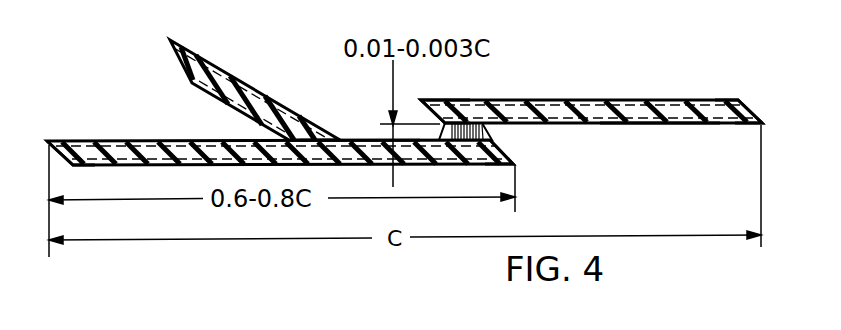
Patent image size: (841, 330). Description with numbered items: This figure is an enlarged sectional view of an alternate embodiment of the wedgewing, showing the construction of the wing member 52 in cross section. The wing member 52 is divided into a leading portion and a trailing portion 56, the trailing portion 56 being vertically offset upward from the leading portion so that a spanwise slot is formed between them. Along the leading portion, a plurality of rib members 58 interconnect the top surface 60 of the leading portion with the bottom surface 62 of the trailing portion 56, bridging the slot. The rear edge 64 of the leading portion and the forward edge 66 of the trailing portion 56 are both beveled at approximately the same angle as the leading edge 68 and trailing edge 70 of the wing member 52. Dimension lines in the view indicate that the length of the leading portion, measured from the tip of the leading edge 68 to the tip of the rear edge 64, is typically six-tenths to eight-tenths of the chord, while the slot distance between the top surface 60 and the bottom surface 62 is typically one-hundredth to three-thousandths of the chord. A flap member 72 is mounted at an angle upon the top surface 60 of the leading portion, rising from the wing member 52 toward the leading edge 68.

The wing member 52 is at (128, 140).
The trailing portion 56 is at (610, 99).
The rib members 58 is at (495, 128).
The top surface 60 is at (362, 140).
The bottom surface 62 is at (655, 125).
The rear edge 64 is at (513, 163).
The forward edge 66 is at (418, 108).
The leading edge 68 is at (72, 166).
The trailing edge 70 is at (739, 99).
The flap member 72 is at (240, 82).